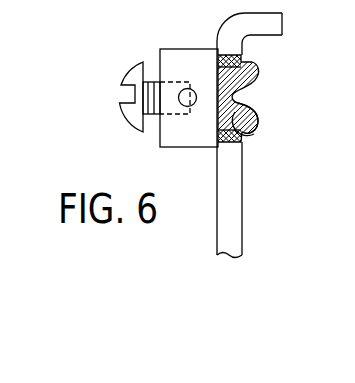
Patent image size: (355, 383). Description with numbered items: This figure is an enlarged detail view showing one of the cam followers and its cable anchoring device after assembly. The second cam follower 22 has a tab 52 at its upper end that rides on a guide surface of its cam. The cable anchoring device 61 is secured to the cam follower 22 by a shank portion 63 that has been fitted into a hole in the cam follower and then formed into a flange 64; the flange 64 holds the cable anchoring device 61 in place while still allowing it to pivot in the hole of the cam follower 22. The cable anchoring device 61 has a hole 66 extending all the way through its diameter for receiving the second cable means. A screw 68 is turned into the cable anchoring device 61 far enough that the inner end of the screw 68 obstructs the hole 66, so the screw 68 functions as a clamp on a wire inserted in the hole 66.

The second cam follower 22 is at (243, 202).
The tab 52 is at (283, 22).
The cable anchoring device 61 is at (159, 49).
The shank portion 63 is at (234, 100).
The flange 64 is at (259, 130).
The hole 66 is at (192, 90).
The screw 68 is at (134, 121).